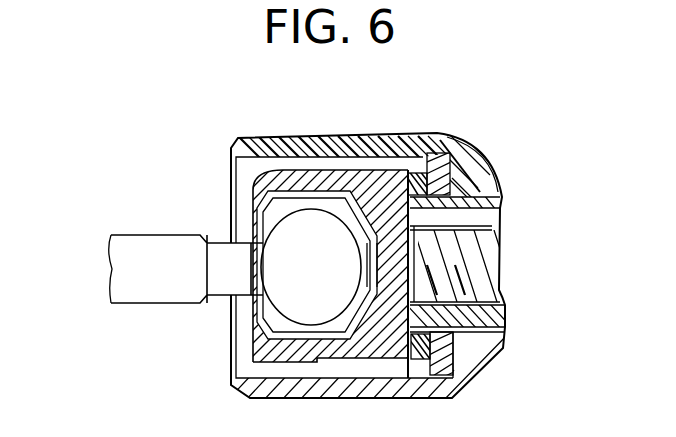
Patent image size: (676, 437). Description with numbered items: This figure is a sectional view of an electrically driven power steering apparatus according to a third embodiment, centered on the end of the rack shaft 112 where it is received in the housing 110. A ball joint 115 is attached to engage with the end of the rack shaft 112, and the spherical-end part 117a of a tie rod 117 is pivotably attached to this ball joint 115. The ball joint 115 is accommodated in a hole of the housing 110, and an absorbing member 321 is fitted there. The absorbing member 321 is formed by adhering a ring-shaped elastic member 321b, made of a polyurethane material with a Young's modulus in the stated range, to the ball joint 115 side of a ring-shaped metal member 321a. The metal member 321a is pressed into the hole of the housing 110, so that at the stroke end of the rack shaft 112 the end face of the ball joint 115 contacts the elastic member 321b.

The housing 110 is at (268, 148).
The rack shaft 112 is at (470, 185).
The ball joint 115 is at (262, 194).
The tie rod 117 is at (128, 272).
The spherical-end part 117a is at (303, 293).
The absorbing member 321 is at (440, 136).
The metal member 321a is at (452, 177).
The elastic member 321b is at (412, 176).